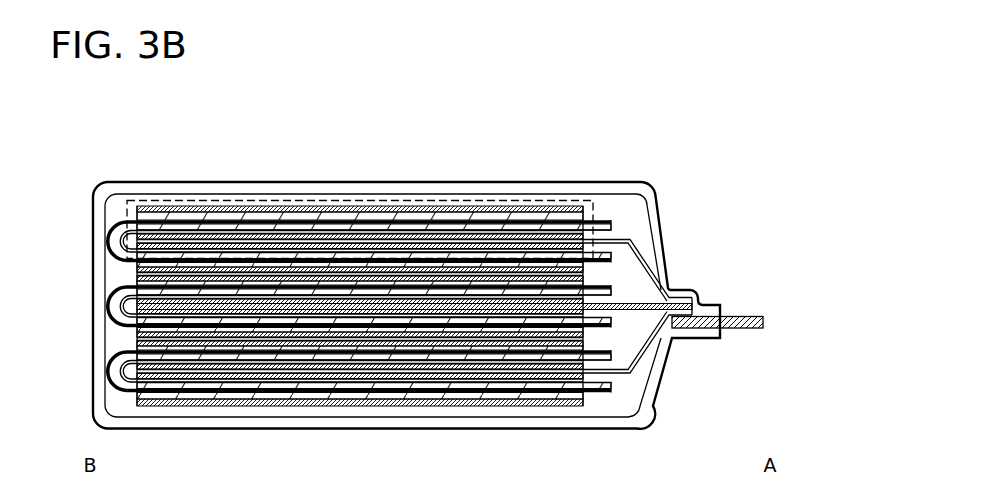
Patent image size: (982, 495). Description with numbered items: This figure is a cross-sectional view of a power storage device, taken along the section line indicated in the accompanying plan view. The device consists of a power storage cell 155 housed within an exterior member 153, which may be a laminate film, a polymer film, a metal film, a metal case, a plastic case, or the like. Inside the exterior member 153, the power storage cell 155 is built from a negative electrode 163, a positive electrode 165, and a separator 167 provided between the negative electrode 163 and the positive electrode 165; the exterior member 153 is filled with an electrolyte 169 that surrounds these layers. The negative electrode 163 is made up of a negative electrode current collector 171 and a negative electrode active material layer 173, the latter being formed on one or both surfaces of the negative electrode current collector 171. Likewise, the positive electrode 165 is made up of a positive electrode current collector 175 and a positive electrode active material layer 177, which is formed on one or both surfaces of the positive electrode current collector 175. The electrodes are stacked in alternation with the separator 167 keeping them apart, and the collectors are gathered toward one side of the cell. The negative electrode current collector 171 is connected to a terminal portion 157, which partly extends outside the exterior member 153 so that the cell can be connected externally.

The exterior member 153 is at (661, 237).
The power storage cell 155 is at (158, 198).
The terminal portion 157 is at (763, 316).
The negative electrode 163 is at (197, 110).
The positive electrode 165 is at (405, 110).
The separator 167 is at (342, 228).
The electrolyte 169 is at (627, 220).
The negative electrode current collector 171 is at (237, 208).
The negative electrode active material layer 173 is at (289, 220).
The positive electrode current collector 175 is at (487, 246).
The positive electrode active material layer 177 is at (430, 236).